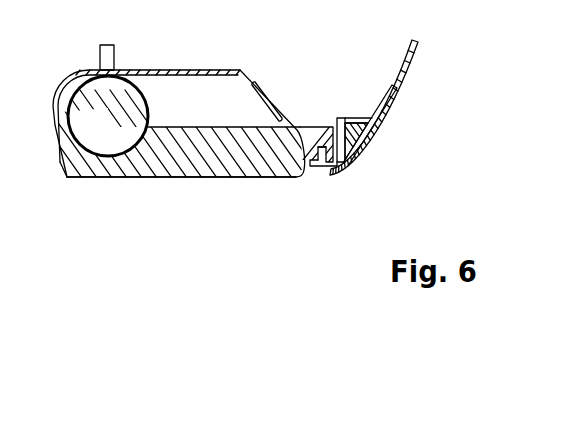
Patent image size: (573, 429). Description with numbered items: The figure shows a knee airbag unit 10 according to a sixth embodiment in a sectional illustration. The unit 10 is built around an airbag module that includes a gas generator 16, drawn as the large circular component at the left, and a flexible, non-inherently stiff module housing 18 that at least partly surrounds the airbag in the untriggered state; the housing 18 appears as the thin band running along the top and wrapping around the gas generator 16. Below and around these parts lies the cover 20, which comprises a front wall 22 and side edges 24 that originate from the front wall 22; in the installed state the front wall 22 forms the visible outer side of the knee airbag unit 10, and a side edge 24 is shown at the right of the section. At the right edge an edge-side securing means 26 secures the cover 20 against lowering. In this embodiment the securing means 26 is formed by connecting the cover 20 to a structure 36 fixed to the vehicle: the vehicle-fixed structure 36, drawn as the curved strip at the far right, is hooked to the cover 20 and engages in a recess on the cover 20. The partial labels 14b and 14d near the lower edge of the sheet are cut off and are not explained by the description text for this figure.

The gas generator 16 is at (90, 100).
The module housing 18 is at (157, 70).
The cover 20 is at (140, 168).
The front wall 22 is at (217, 190).
The side edges 24 is at (328, 90).
The securing means 26 is at (318, 199).
The structure fixed to the vehicle 36 is at (414, 72).
The knee airbag unit 10 is at (466, 428).
The segment 14b is at (98, 424).
The segment 14d is at (363, 415).